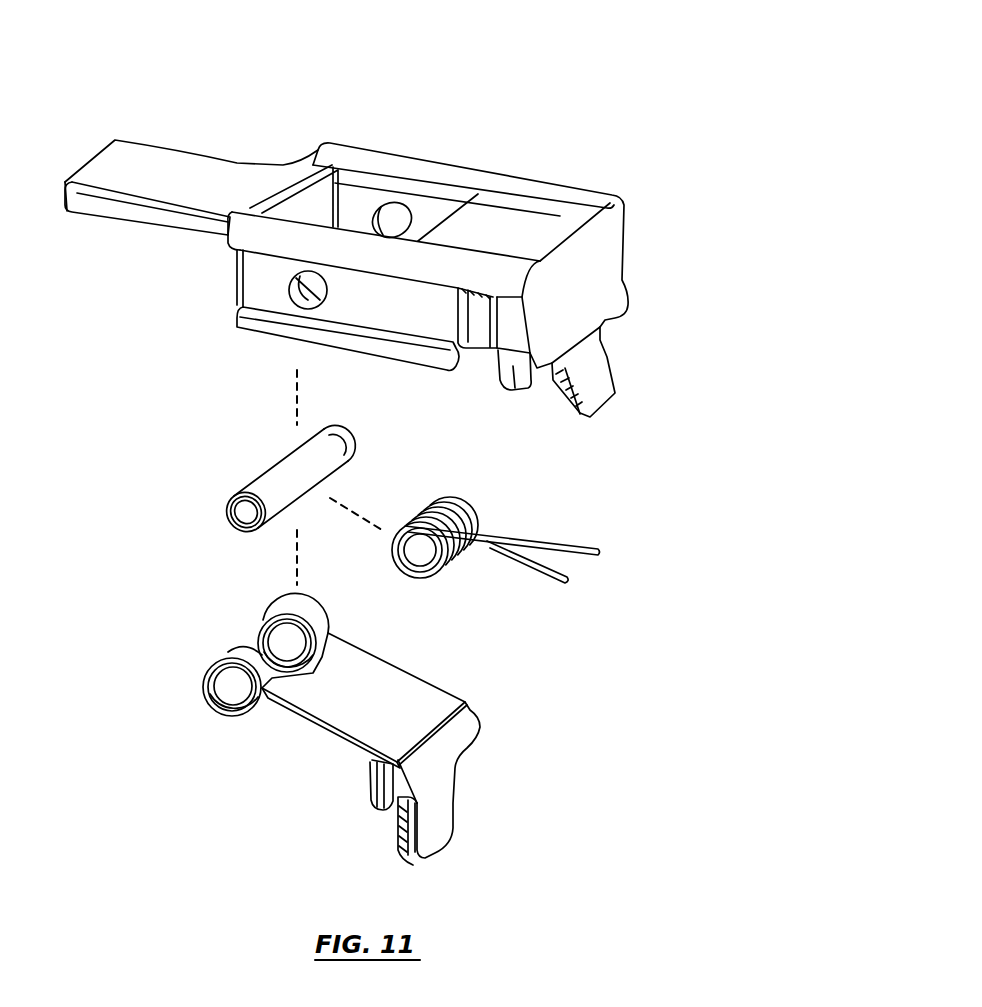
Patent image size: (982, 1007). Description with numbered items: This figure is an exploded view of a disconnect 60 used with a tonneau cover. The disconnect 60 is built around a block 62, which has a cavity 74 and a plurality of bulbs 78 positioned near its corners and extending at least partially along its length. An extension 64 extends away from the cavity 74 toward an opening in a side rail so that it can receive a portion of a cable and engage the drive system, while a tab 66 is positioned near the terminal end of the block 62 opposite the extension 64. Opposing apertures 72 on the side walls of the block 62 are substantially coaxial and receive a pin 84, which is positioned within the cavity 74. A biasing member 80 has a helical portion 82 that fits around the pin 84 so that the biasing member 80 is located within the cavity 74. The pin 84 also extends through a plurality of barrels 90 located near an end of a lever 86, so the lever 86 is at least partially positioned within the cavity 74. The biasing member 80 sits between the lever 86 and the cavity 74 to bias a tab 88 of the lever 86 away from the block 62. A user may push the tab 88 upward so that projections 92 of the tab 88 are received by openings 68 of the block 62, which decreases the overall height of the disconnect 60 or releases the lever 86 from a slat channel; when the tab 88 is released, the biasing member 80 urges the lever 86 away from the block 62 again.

The disconnect 60 is at (271, 84).
The block 62 is at (574, 290).
The extension 64 is at (123, 162).
The tab 66 is at (593, 380).
The openings 68 is at (478, 282).
The apertures 72 is at (397, 193).
The cavity 74 is at (350, 197).
The bulbs 78 is at (518, 277).
The biasing member 80 is at (543, 573).
The helical portion 82 is at (433, 520).
The pin 84 is at (273, 483).
The lever 86 is at (407, 708).
The tab 88 is at (440, 827).
The barrels 90 is at (298, 612).
The projections 92 is at (472, 735).